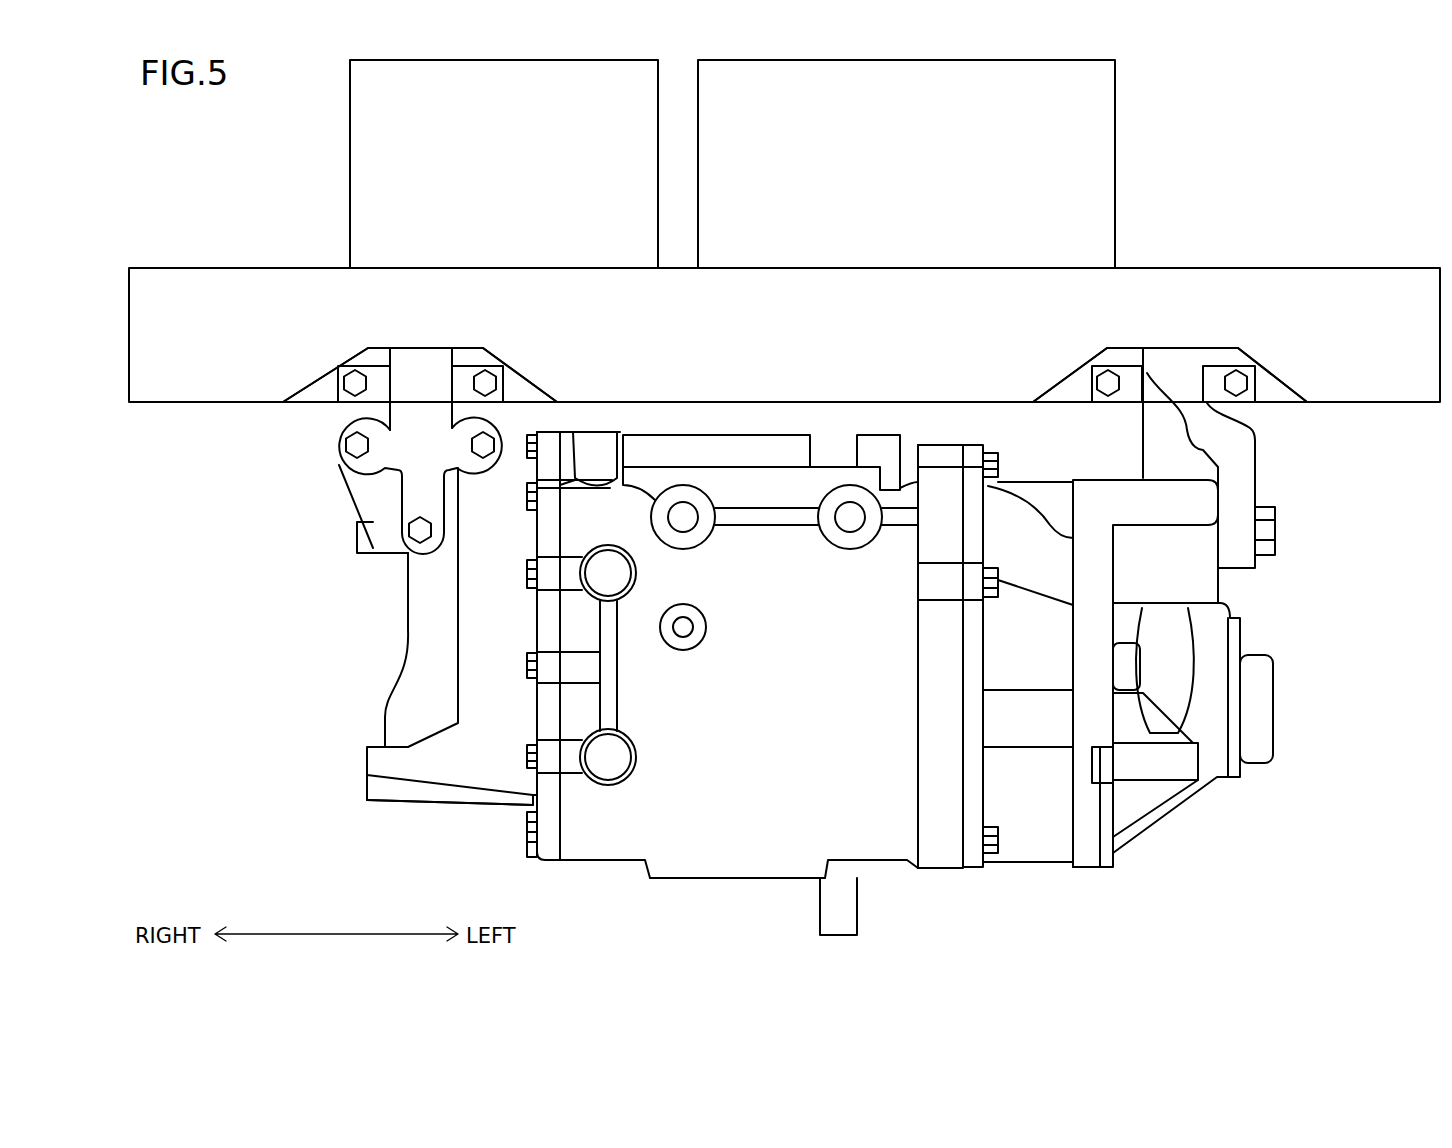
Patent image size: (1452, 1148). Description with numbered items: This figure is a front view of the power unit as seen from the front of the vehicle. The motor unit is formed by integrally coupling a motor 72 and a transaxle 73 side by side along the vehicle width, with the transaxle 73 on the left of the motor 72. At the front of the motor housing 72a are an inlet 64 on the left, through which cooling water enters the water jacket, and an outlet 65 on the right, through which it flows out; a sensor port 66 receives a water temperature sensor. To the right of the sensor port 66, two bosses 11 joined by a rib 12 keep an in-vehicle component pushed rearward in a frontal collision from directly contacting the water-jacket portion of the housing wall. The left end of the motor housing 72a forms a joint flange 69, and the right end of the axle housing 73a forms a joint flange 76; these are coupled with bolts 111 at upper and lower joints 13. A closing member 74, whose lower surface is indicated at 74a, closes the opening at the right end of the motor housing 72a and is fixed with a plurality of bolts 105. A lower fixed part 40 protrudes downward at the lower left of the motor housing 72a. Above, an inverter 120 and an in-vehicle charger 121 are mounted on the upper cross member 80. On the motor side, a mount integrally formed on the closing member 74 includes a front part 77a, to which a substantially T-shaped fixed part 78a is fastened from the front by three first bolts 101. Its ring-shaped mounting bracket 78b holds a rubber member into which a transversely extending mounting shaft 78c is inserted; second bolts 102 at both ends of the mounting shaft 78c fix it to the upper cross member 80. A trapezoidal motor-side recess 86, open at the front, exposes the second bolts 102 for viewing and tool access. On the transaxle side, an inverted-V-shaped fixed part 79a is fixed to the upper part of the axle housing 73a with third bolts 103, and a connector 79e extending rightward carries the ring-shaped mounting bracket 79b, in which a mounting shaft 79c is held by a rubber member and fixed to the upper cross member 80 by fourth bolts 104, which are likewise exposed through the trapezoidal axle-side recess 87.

The bosses 11 is at (638, 571).
The rib 12 is at (617, 698).
The joints 13 is at (917, 577).
The lower fixed part 40 is at (843, 917).
The inlet 64 is at (848, 485).
The outlet 65 is at (683, 485).
The sensor port 66 is at (700, 637).
The joint flange 69 is at (940, 683).
The motor 72 is at (940, 884).
The motor housing 72a is at (716, 880).
The transaxle 73 is at (1050, 878).
The axle housing 73a is at (1140, 833).
The closing member 74 is at (475, 824).
The bracket bottom surface 74a is at (400, 805).
The joint flange 76 is at (975, 643).
The front part 77a is at (370, 505).
The fixed part 78a is at (383, 457).
The mounting bracket 78b is at (428, 365).
The mounting shaft 78c is at (378, 372).
The fixed part 79a is at (1242, 488).
The mounting bracket 79b is at (1176, 362).
The mounting shaft 79c is at (1125, 372).
The connector 79e is at (1238, 442).
The upper cross member 80 is at (1380, 290).
The motor-side recess 86 is at (520, 393).
The axle-side recess 87 is at (1272, 393).
The first bolts 101 is at (345, 445).
The second bolts 102 is at (354, 388).
The third bolts 103 is at (1275, 535).
The fourth bolts 104 is at (1105, 385).
The bolts 105 is at (527, 752).
The bolts 111 is at (993, 905).
The inverter 120 is at (350, 127).
The in-vehicle charger 121 is at (1100, 128).